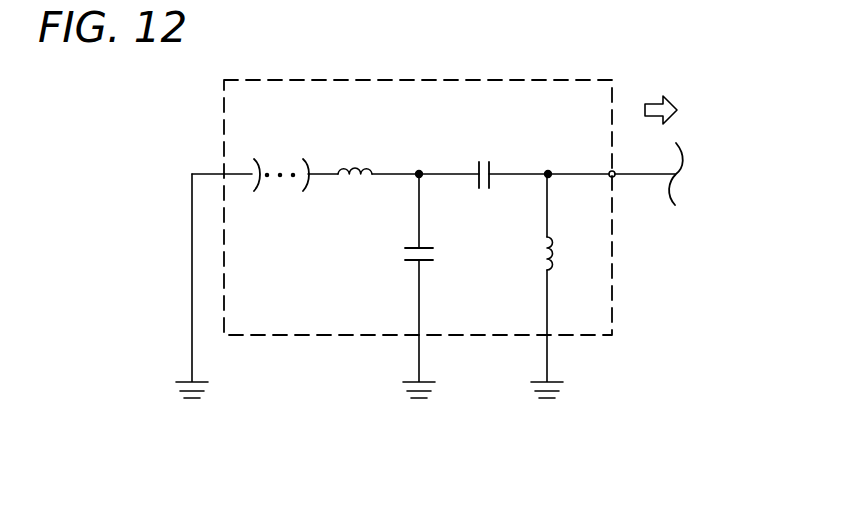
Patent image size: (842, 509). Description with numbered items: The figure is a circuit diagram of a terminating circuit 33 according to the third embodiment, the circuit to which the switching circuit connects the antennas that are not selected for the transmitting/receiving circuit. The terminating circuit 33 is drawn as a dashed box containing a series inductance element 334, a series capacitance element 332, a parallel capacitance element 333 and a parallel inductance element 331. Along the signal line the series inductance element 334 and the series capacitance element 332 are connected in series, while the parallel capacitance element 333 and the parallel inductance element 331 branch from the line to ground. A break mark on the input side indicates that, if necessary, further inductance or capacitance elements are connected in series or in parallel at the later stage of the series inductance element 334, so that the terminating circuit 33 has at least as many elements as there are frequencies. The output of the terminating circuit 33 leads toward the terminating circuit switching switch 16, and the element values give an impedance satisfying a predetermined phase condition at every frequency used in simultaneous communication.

The terminating circuit 33 is at (222, 92).
The series inductance element 334 is at (354, 162).
The series capacitance element 332 is at (487, 161).
The parallel capacitance element 333 is at (403, 252).
The parallel inductance element 331 is at (545, 250).
The terminating circuit switching switch 16 is at (684, 111).